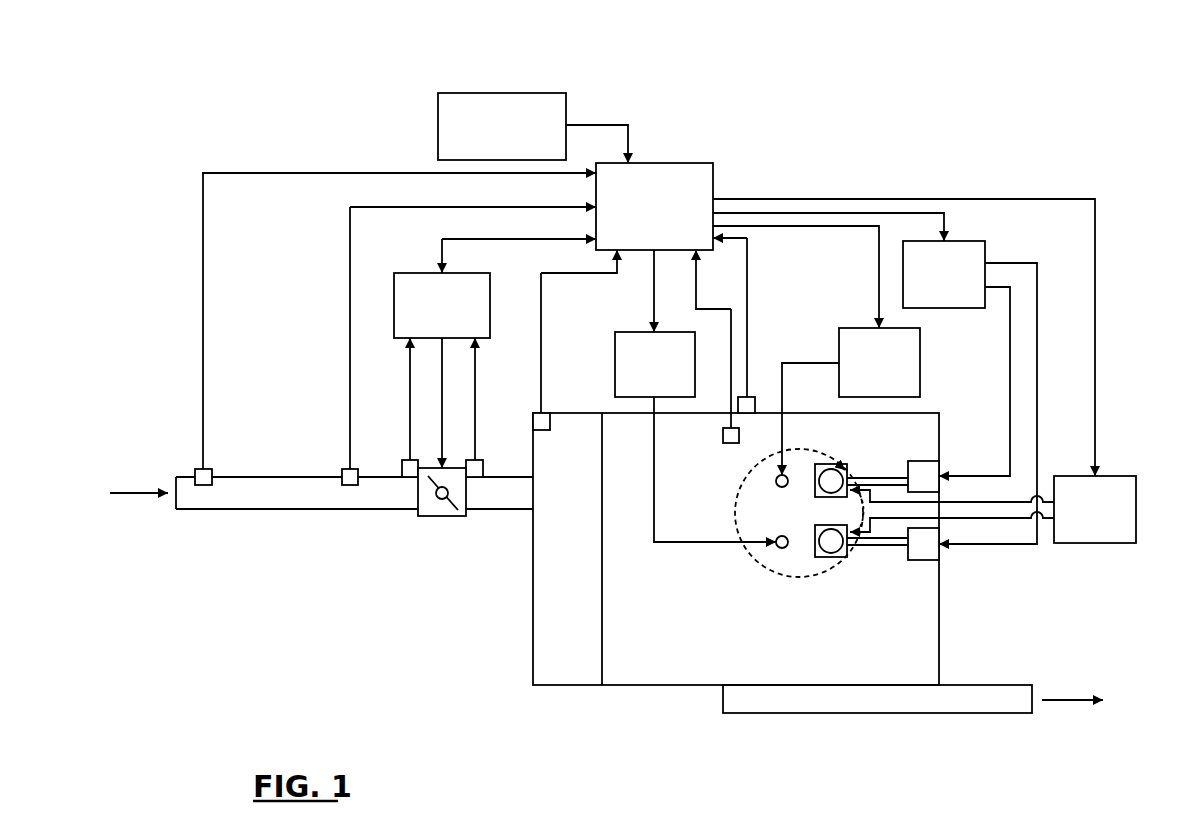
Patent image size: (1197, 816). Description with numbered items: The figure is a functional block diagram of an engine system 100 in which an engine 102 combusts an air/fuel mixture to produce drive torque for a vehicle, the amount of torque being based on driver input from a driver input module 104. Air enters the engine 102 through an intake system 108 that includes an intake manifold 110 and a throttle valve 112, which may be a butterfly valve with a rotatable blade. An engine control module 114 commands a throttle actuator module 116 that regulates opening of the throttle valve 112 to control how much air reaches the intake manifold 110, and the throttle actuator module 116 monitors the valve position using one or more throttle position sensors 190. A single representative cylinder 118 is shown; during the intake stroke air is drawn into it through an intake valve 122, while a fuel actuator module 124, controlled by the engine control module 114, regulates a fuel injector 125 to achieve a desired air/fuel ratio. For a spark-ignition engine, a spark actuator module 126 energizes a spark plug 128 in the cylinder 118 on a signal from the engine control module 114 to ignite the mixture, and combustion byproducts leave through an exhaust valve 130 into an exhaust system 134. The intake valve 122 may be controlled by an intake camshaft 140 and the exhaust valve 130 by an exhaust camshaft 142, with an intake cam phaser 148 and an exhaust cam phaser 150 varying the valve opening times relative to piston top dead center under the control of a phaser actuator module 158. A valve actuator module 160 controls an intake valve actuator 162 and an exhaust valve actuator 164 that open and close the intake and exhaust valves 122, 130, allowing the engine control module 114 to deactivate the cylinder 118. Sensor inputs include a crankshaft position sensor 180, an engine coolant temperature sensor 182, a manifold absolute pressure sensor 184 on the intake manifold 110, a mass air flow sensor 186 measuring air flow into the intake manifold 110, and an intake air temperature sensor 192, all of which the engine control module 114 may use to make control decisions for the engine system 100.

The engine system 100 is at (148, 68).
The engine 102 is at (939, 413).
The driver input module 104 is at (438, 125).
The intake system 108 is at (518, 509).
The intake manifold 110 is at (533, 623).
The throttle valve 112 is at (440, 516).
The engine control module 114 is at (713, 168).
The throttle actuator module 116 is at (415, 273).
The cylinder 118 is at (762, 572).
The intake valve 122 is at (813, 487).
The fuel actuator module 124 is at (615, 365).
The fuel injector 125 is at (784, 535).
The spark actuator module 126 is at (920, 363).
The spark plug 128 is at (775, 482).
The exhaust valve 130 is at (813, 550).
The exhaust system 134 is at (1005, 714).
The intake camshaft 140 is at (882, 476).
The exhaust camshaft 142 is at (885, 548).
The intake cam phaser 148 is at (920, 461).
The exhaust cam phaser 150 is at (924, 560).
The phaser actuator module 158 is at (985, 250).
The valve actuator module 160 is at (1120, 476).
The intake valve actuator 162 is at (836, 464).
The exhaust valve actuator 164 is at (836, 557).
The crankshaft position sensor 180 is at (752, 397).
The engine coolant temperature sensor 182 is at (731, 443).
The manifold absolute pressure sensor 184 is at (535, 412).
The mass air flow sensor 186 is at (343, 468).
The throttle position sensors 190 is at (408, 477).
The intake air temperature sensor 192 is at (195, 468).